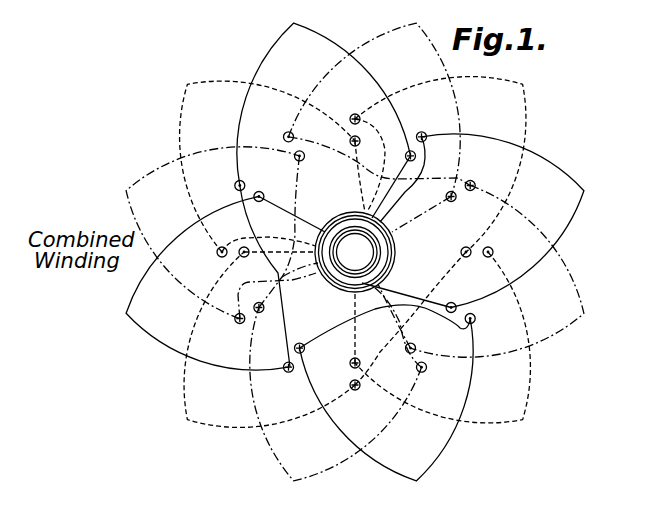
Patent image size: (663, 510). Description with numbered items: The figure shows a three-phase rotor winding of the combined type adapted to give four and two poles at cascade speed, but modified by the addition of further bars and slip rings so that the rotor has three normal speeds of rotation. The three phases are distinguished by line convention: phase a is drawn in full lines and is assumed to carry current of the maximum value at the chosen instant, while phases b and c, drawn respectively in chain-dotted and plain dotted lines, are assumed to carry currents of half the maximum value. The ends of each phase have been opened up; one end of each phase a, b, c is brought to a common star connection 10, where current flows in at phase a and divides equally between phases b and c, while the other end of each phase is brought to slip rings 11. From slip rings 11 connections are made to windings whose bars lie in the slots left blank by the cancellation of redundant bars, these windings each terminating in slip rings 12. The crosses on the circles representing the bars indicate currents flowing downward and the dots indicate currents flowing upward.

The star connection 10 is at (355, 252).
The slip rings 11 is at (390, 252).
The slip rings 12 is at (353, 212).
The phase a winding a is at (357, 252).
The phase b winding b is at (353, 256).
The phase c winding c is at (353, 252).